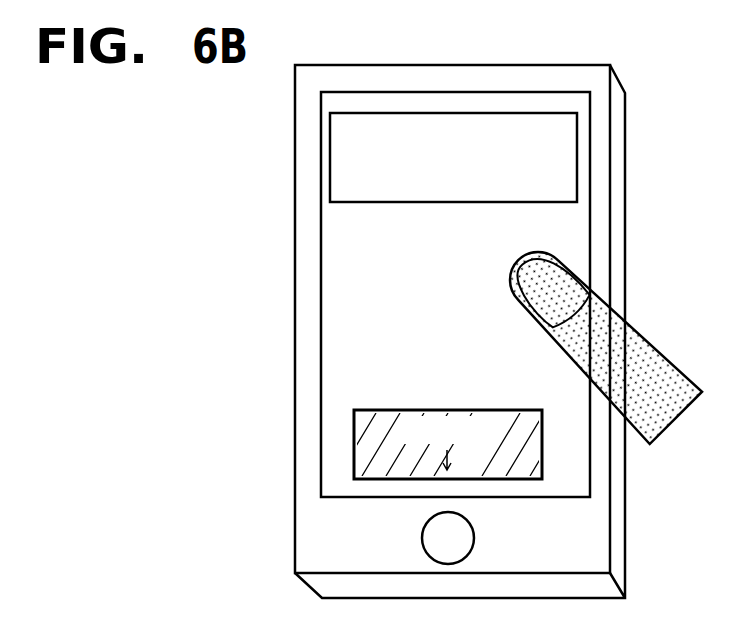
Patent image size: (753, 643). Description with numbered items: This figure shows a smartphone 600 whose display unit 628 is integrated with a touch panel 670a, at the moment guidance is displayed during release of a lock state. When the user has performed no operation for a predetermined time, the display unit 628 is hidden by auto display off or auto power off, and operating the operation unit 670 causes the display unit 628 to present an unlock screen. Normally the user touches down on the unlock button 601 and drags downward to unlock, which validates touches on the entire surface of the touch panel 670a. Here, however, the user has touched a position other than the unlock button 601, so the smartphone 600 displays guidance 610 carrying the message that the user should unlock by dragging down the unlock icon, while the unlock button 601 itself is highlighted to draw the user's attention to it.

The smartphone 600 is at (622, 122).
The guidance 610 is at (448, 113).
The display unit 628 is at (372, 294).
The touch panel 670a is at (333, 222).
The unlock button 601 is at (354, 440).
The operation unit 670 is at (422, 535).